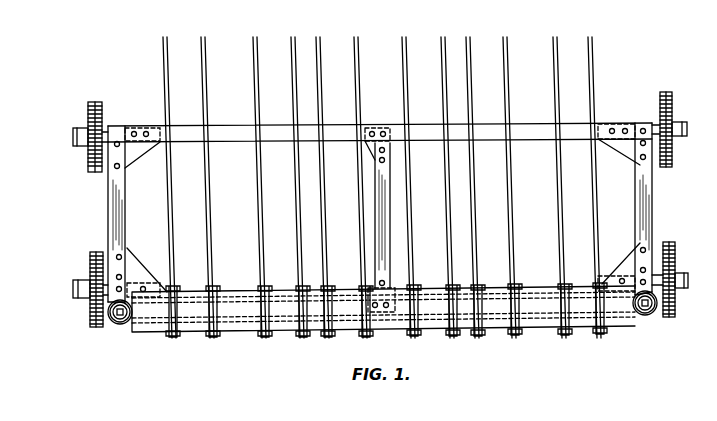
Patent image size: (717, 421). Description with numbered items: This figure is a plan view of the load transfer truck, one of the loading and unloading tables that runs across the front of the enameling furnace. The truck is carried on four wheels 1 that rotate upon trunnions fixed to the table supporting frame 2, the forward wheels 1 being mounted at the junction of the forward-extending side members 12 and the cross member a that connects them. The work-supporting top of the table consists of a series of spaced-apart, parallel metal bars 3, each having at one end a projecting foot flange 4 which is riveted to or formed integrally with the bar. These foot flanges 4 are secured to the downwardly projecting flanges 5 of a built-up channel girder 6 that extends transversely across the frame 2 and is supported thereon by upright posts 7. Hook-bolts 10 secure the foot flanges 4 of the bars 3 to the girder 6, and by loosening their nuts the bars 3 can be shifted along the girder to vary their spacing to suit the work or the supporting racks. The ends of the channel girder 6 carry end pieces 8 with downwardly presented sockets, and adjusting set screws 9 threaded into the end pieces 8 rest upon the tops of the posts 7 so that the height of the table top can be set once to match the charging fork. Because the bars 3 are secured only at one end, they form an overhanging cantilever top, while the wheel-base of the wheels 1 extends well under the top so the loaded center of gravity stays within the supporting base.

The wheels 1 is at (90, 111).
The table supporting frame 2 is at (136, 272).
The metal bars 3 is at (204, 97).
The foot flange 4 is at (216, 303).
The downwardly projecting flanges 5 is at (250, 334).
The channel girder 6 is at (283, 338).
The upright posts 7 is at (117, 322).
The end pieces 8 is at (112, 316).
The adjusting set screws 9 is at (122, 321).
The hook-bolts 10 is at (174, 287).
The side members 12 is at (112, 211).
The central brace plate a is at (334, 110).